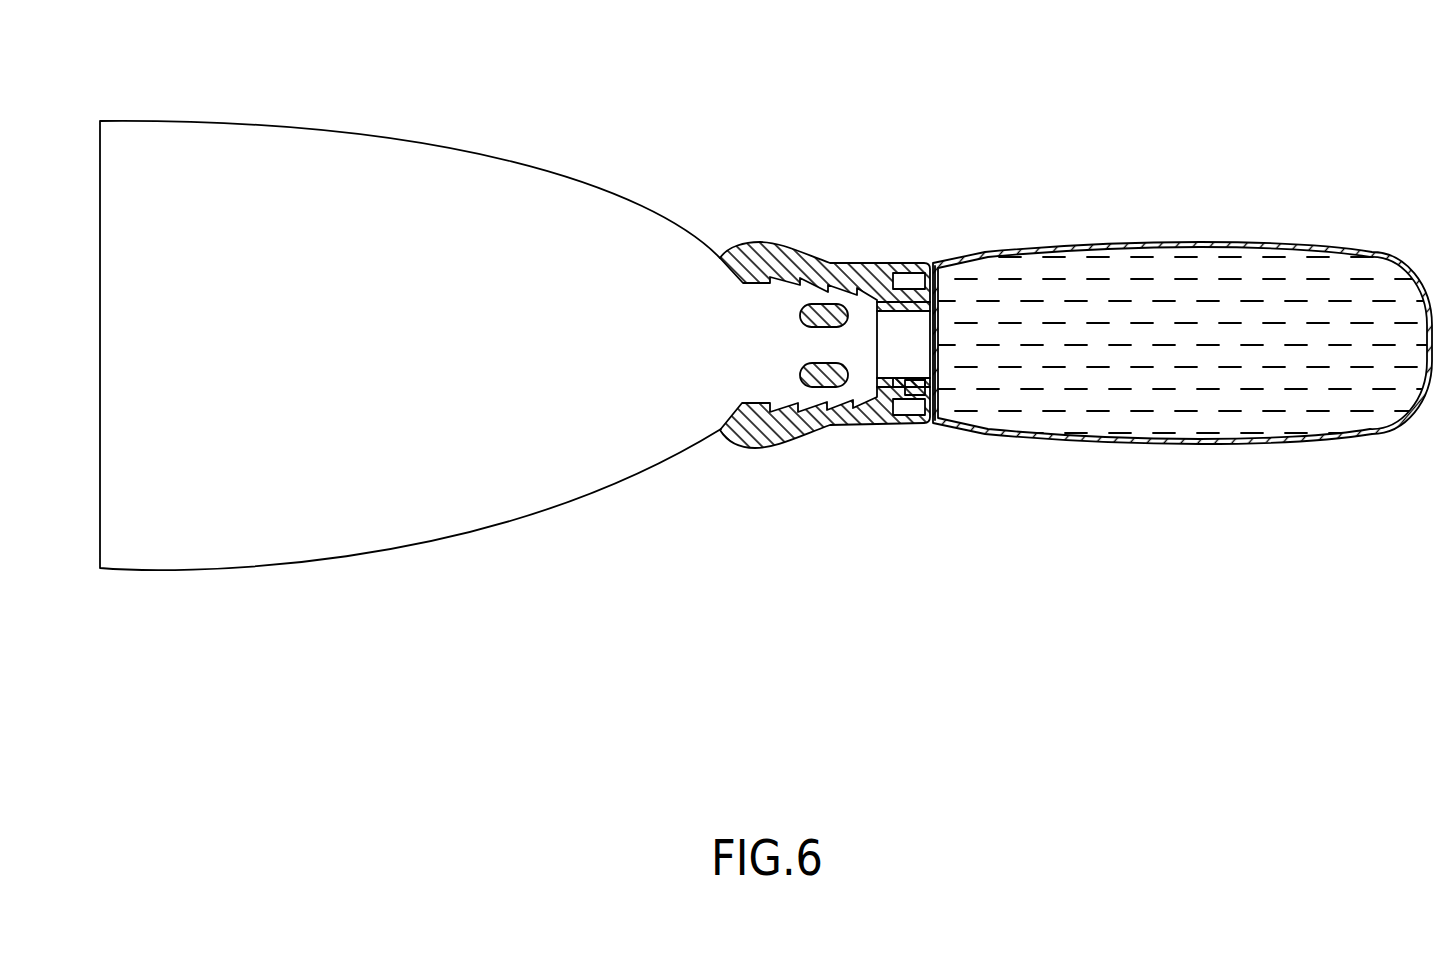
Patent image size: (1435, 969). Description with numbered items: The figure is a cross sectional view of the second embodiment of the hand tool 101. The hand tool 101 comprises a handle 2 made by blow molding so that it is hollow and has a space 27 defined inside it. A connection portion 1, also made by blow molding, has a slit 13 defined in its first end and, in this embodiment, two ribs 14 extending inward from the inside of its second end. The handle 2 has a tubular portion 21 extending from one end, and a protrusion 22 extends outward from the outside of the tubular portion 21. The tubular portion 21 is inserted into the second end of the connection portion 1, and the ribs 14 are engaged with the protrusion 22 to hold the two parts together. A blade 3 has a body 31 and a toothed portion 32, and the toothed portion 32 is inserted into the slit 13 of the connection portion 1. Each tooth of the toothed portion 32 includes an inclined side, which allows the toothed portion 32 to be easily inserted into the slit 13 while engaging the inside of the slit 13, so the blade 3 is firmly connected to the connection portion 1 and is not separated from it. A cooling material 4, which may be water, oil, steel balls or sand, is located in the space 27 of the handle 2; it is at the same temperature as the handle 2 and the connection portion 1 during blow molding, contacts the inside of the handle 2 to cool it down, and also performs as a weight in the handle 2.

The hand tool 101 is at (763, 118).
The connection portion 1 is at (772, 452).
The slit 13 is at (742, 405).
The rib 14 is at (913, 303).
The handle 2 is at (1184, 356).
The tubular portion 21 is at (917, 392).
The protrusion 22 is at (902, 388).
The space 27 is at (1410, 422).
The blade 3 is at (428, 136).
The body 31 is at (393, 517).
The toothed portion 32 is at (807, 280).
The cooling material 4 is at (1226, 278).